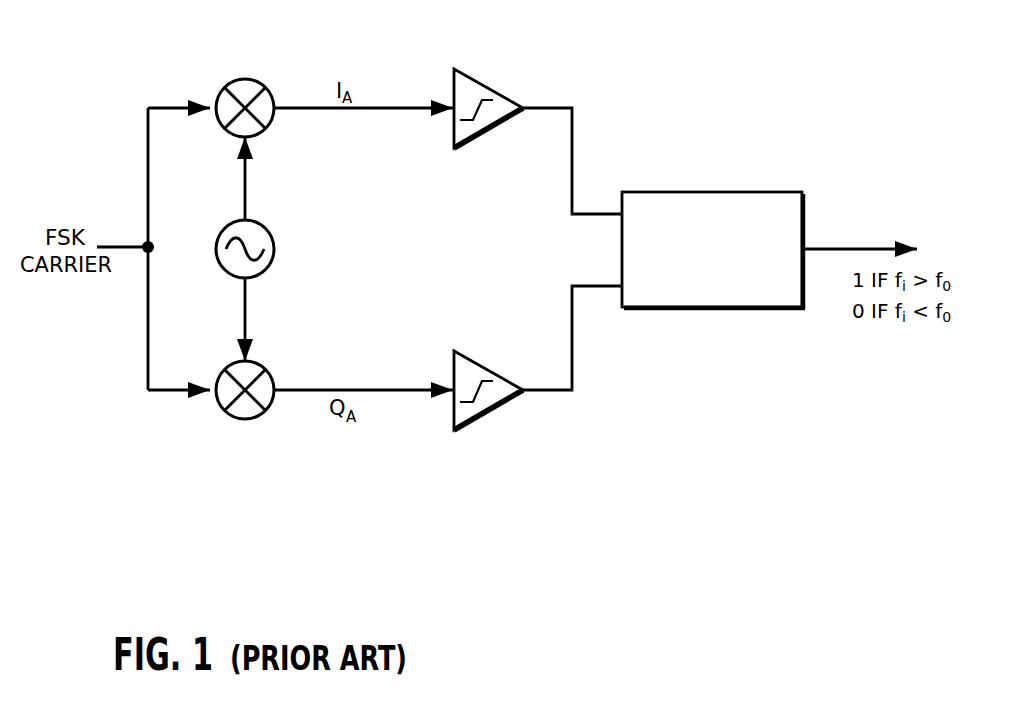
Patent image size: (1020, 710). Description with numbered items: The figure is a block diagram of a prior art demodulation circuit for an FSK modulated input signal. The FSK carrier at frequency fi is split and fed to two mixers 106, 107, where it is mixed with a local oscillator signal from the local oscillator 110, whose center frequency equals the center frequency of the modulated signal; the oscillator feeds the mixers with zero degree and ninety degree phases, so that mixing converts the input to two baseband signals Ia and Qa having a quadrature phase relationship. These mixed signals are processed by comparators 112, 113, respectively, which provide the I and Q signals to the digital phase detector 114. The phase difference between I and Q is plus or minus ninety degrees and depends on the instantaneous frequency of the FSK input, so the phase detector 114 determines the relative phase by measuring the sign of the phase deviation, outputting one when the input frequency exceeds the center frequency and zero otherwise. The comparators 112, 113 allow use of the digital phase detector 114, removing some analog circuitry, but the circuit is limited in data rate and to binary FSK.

The mixer 106 is at (257, 417).
The mixer 107 is at (233, 81).
The local oscillator 110 is at (272, 262).
The comparator 112 is at (485, 82).
The comparator 113 is at (495, 415).
The digital phase detector 114 is at (794, 300).